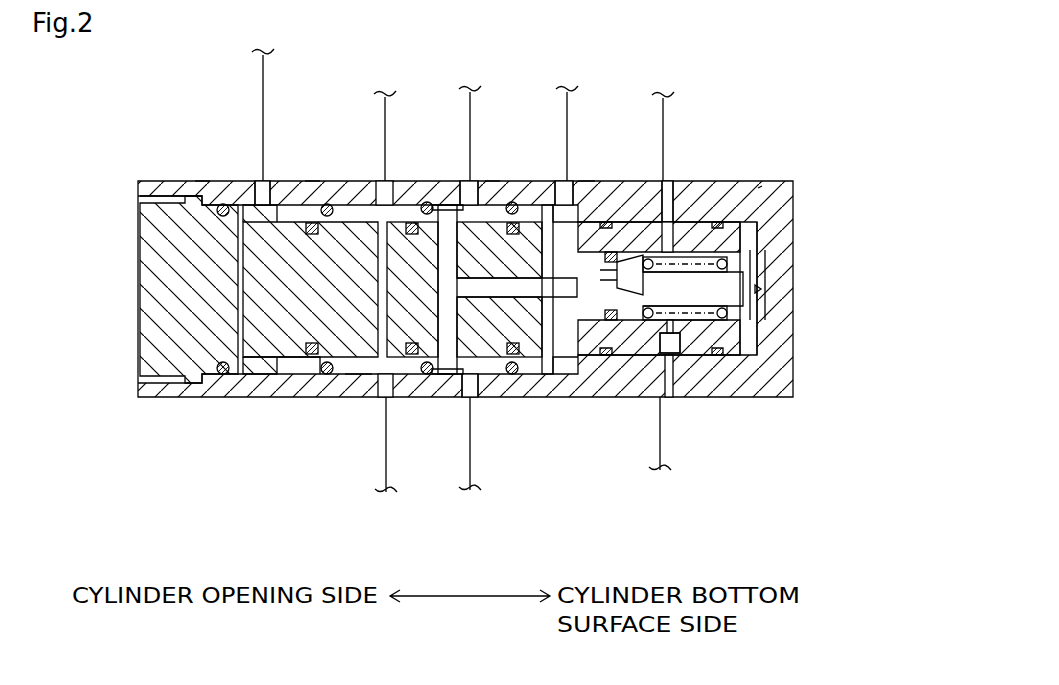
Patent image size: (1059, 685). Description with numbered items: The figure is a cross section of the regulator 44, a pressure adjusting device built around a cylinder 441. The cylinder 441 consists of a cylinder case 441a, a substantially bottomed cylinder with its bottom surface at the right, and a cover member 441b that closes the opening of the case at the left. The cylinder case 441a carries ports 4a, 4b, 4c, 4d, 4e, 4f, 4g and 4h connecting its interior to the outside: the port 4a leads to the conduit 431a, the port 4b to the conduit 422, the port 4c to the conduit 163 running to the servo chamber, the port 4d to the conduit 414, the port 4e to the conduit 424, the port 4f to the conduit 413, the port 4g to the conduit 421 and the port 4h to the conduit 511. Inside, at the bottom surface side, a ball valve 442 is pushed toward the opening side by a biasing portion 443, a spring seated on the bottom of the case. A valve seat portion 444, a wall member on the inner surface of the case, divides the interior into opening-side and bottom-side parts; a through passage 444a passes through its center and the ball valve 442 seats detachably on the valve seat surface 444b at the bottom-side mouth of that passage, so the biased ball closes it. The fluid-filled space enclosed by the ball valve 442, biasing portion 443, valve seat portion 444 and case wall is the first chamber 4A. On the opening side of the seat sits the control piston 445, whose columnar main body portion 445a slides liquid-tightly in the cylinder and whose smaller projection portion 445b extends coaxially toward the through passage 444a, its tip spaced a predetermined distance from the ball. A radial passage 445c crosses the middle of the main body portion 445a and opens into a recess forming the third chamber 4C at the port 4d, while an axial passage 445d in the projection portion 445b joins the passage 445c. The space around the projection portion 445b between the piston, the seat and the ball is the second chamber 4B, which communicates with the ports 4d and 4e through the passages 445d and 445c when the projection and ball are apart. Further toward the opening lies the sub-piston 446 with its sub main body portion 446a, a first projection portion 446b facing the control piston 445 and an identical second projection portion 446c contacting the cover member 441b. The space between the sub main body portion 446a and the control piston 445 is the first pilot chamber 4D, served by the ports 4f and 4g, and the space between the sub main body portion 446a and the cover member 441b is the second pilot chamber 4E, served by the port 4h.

The first chamber 4A is at (745, 273).
The second chamber 4B is at (585, 181).
The third chamber 4C is at (490, 181).
The first pilot chamber 4D is at (313, 181).
The second pilot chamber 4E is at (202, 181).
The port 4a is at (668, 190).
The port 4b is at (668, 390).
The port 4c is at (550, 181).
The port 4d is at (455, 181).
The port 4e is at (472, 397).
The port 4f is at (367, 181).
The port 4g is at (358, 397).
The port 4h is at (254, 181).
The regulator 44 is at (828, 334).
The conduit 163 is at (568, 115).
The conduit 413 is at (387, 118).
The conduit 414 is at (470, 115).
The conduit 421 is at (383, 472).
The conduit 422 is at (658, 446).
The conduit 424 is at (470, 472).
The conduit 431a is at (664, 132).
The cylinder 441 is at (806, 209).
The cylinder case 441a is at (758, 188).
The cover member 441b is at (152, 235).
The ball valve 442 is at (660, 362).
The biasing portion 443 is at (750, 348).
The valve seat portion 444 is at (716, 283).
The through passage 444a is at (612, 370).
The valve seat surface 444b is at (735, 330).
The control piston 445 is at (467, 354).
The main body portion 445a is at (393, 340).
The projection portion 445b is at (588, 370).
The passage 445c is at (448, 337).
The passage 445d is at (488, 293).
The sub-piston 446 is at (237, 547).
The sub main body portion 446a is at (278, 320).
The first projection portion 446b is at (315, 352).
The second projection portion 446c is at (230, 298).
The conduit 511 is at (265, 88).